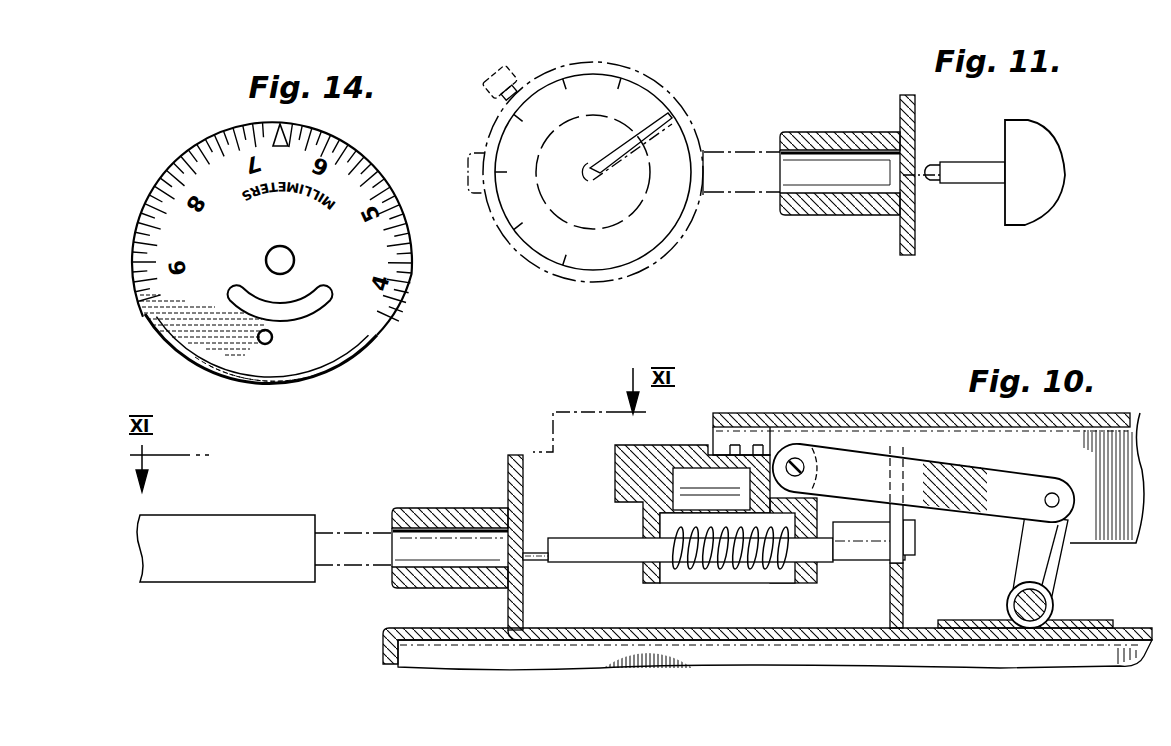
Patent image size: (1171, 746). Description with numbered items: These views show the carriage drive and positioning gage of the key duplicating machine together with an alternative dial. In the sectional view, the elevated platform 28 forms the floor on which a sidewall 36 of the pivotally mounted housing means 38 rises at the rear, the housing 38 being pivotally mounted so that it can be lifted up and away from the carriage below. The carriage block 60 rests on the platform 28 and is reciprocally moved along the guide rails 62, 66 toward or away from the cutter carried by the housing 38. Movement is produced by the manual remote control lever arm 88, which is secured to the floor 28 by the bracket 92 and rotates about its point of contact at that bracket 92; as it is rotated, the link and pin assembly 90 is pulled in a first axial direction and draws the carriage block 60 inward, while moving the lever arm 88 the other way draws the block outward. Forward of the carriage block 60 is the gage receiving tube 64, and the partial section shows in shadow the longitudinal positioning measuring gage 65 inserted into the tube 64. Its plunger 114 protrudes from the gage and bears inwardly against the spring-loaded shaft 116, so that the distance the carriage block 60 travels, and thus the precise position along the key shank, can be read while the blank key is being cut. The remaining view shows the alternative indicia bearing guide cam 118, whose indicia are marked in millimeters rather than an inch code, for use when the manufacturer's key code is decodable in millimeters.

In FIG. 10, the elevated platform 28 is at (410, 628).
In FIG. 10, the sidewall 36 is at (1116, 543).
In FIG. 10, the pivotally mounted housing means 38 is at (925, 413).
In FIG. 11, the carriage block 60 is at (1042, 180).
In FIG. 10, the carriage block 60 is at (626, 448).
In FIG. 10, the guide rail 62 is at (866, 548).
In FIG. 11, the gage receiving tube 64 is at (810, 131).
In FIG. 10, the gage receiving tube 64 is at (452, 512).
In FIG. 11, the gage 65 is at (557, 240).
In FIG. 10, the guide rail 66 is at (205, 558).
In FIG. 10, the manual remote control lever arm 88 is at (1029, 627).
In FIG. 10, the link and pin assembly 90 is at (837, 452).
In FIG. 10, the bracket 92 is at (1008, 592).
In FIG. 11, the plunger 114 is at (927, 164).
In FIG. 10, the plunger 114 is at (534, 562).
In FIG. 11, the spring-loaded shaft 116 is at (975, 172).
In FIG. 10, the spring-loaded shaft 116 is at (714, 548).
In FIG. 14, the indicia bearing guide cam 118 is at (322, 342).